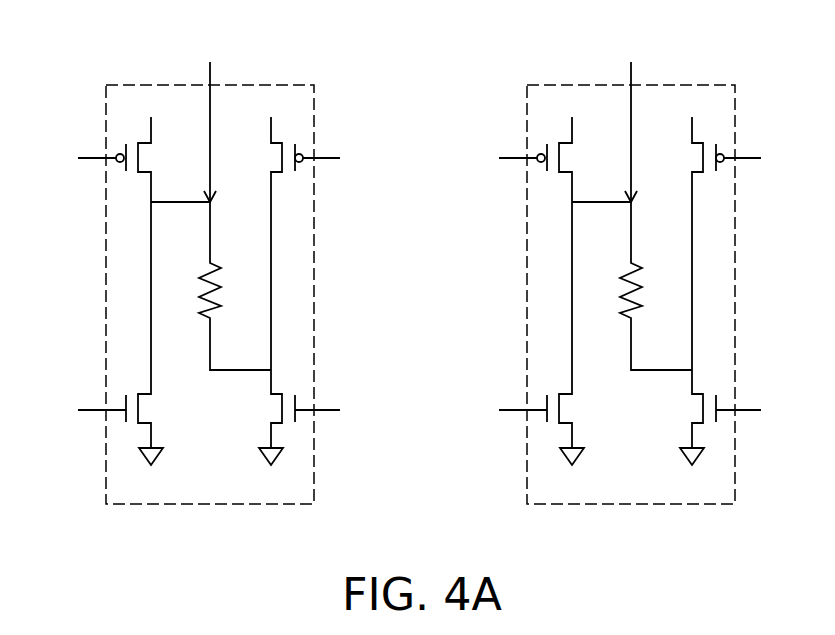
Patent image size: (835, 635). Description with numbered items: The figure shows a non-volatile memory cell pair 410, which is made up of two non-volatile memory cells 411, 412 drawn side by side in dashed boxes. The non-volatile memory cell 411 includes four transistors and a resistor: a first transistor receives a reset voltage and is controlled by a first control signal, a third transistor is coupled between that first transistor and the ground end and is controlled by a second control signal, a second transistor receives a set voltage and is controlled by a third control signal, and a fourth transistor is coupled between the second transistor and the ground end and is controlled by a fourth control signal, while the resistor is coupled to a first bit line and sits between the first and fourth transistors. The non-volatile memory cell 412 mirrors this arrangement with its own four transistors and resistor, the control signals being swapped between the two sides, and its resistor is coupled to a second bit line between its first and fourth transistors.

The non-volatile memory cell pair 410 is at (802, 567).
The non-volatile memory cell 411 is at (287, 84).
The non-volatile memory cell 412 is at (708, 84).